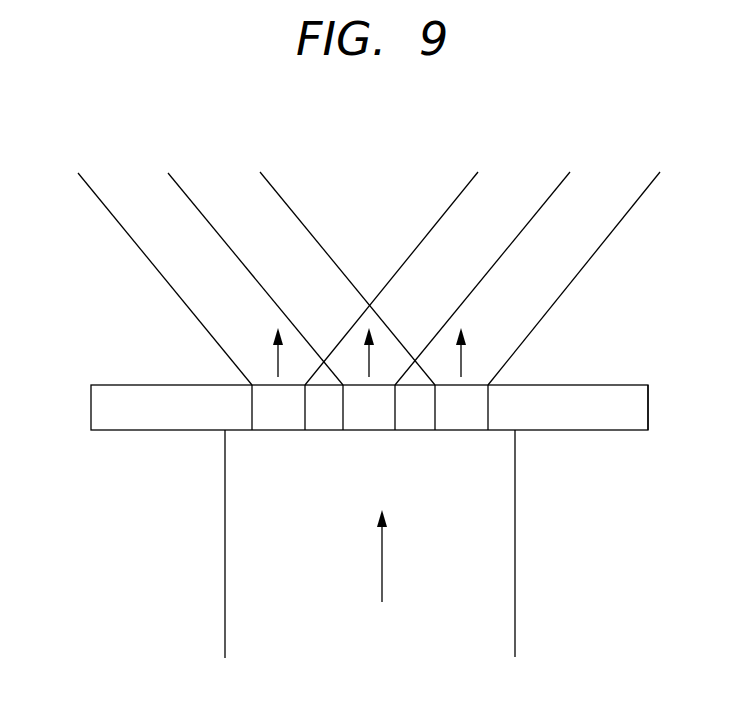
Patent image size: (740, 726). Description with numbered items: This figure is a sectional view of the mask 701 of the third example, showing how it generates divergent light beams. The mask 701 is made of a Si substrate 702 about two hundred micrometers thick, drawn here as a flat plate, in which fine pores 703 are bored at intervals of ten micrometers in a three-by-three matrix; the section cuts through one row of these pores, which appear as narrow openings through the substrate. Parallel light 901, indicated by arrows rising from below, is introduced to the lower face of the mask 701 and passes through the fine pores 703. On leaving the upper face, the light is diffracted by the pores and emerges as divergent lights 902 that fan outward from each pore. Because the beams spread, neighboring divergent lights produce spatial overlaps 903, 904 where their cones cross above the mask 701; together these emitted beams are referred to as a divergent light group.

The mask 701 is at (623, 455).
The Si substrate 702 is at (602, 397).
The fine pores 703 is at (275, 420).
The parallel light 901 is at (498, 584).
The divergent lights 902 is at (157, 250).
The spatial overlap 903 is at (505, 188).
The spatial overlap 904 is at (373, 188).